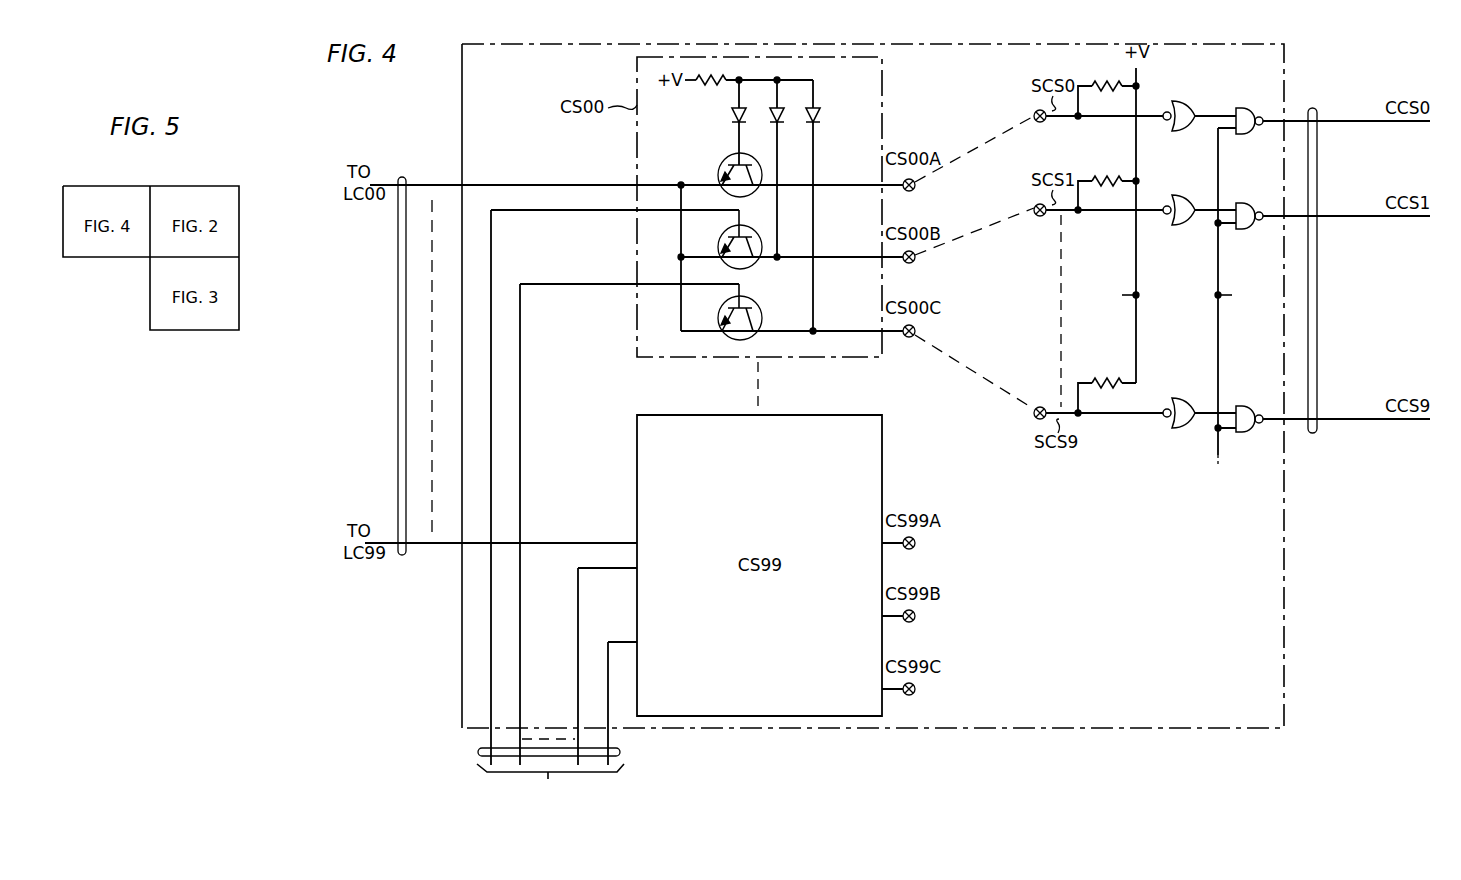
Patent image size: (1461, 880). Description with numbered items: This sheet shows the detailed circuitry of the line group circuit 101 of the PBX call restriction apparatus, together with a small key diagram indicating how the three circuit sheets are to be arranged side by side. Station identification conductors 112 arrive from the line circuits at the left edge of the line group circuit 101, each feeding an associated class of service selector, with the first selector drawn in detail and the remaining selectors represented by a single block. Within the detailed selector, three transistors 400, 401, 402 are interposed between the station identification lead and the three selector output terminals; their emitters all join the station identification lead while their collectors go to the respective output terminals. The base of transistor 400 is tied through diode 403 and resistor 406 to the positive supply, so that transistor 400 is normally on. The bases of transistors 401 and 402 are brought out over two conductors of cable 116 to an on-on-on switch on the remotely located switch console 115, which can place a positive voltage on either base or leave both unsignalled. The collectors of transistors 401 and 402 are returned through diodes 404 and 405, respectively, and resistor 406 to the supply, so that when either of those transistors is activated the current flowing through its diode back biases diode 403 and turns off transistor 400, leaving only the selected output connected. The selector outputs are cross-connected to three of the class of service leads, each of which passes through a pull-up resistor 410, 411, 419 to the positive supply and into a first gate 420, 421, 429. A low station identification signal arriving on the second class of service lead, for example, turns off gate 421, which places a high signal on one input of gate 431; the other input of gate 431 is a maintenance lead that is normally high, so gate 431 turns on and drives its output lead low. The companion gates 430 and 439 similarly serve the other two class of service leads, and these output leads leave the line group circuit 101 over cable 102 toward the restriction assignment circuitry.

The line group circuit 101 is at (873, 386).
The cable to line group circuit output (CCS lines) 102 is at (1312, 108).
The station identification conductors 112 is at (402, 177).
The switch console 115 is at (548, 803).
The cable 116 is at (478, 752).
The transistor 400 is at (718, 172).
The transistor 401 is at (762, 238).
The transistor 402 is at (758, 300).
The diode 403 is at (733, 114).
The diode 404 is at (780, 106).
The diode 405 is at (820, 116).
The resistor 406 is at (705, 86).
The resistor 410 is at (1104, 82).
The resistor 411 is at (1105, 176).
The resistor 419 is at (1104, 378).
The NOR gate 420 is at (1181, 100).
The gate 421 is at (1183, 196).
The NOR gate 429 is at (1178, 398).
The NAND gate 430 is at (1246, 107).
The gate 431 is at (1249, 203).
The NAND gate 439 is at (1248, 405).